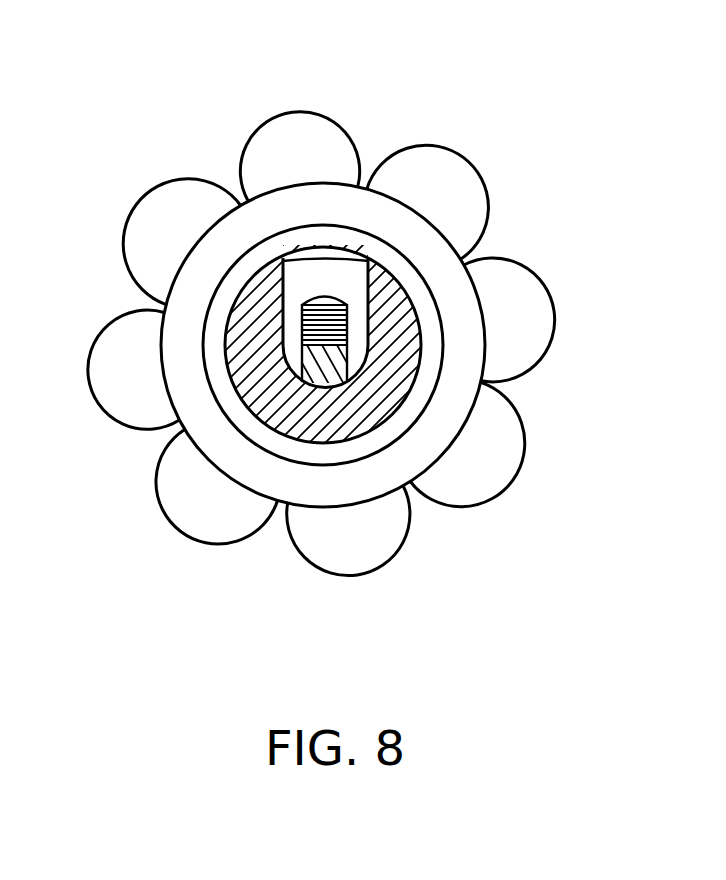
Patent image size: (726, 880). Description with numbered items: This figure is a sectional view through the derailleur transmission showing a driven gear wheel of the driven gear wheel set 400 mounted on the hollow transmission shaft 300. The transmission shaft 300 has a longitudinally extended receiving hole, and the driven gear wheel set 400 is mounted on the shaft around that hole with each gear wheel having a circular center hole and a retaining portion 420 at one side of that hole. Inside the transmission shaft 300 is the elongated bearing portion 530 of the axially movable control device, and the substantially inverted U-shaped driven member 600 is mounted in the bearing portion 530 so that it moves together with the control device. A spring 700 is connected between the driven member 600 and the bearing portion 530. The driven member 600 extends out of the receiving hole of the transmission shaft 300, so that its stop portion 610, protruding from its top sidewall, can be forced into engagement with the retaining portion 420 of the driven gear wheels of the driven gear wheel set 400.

The transmission shaft 300 is at (367, 410).
The driven gear wheel set 400 is at (467, 177).
The retaining portion 420 is at (240, 277).
The bearing portion 530 is at (323, 368).
The driven member 600 is at (347, 285).
The stop portion 610 is at (337, 258).
The spring 700 is at (320, 326).